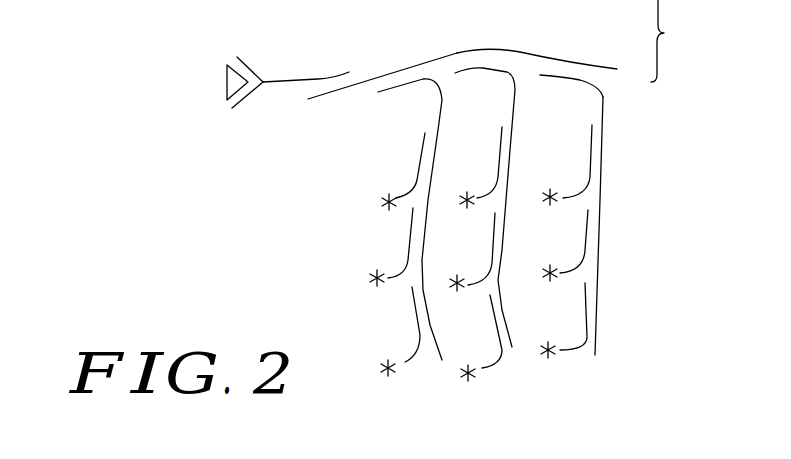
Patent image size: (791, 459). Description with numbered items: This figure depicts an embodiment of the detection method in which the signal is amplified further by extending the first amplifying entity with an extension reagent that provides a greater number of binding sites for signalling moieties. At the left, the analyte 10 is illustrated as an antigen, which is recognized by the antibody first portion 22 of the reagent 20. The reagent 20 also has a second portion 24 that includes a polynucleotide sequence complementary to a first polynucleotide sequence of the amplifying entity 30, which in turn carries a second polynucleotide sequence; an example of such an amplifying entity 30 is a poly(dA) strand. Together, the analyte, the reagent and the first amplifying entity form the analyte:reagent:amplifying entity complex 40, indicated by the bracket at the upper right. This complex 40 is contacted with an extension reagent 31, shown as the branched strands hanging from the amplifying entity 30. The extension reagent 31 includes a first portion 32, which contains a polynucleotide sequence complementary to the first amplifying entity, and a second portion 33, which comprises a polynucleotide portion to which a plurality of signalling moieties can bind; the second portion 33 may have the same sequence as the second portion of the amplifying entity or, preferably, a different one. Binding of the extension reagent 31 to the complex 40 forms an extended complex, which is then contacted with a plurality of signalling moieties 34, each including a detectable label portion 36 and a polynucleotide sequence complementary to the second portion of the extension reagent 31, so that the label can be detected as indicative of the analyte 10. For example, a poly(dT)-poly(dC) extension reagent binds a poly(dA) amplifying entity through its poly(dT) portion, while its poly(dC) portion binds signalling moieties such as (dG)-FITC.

The analyte 10 is at (224, 83).
The reagent 20 is at (285, 92).
The first portion of the reagent 22 is at (255, 66).
The second portion of the reagent 24 is at (318, 77).
The amplifying entity 30 is at (563, 60).
The extension reagent 31 is at (603, 210).
The first portion of the extension reagent 32 is at (603, 85).
The second portion of the extension reagent 33 is at (600, 280).
The signalling moieties 34 is at (415, 368).
The detectable label portion 36 is at (375, 209).
The analyte:reagent:amplifying entity complex 40 is at (665, 33).